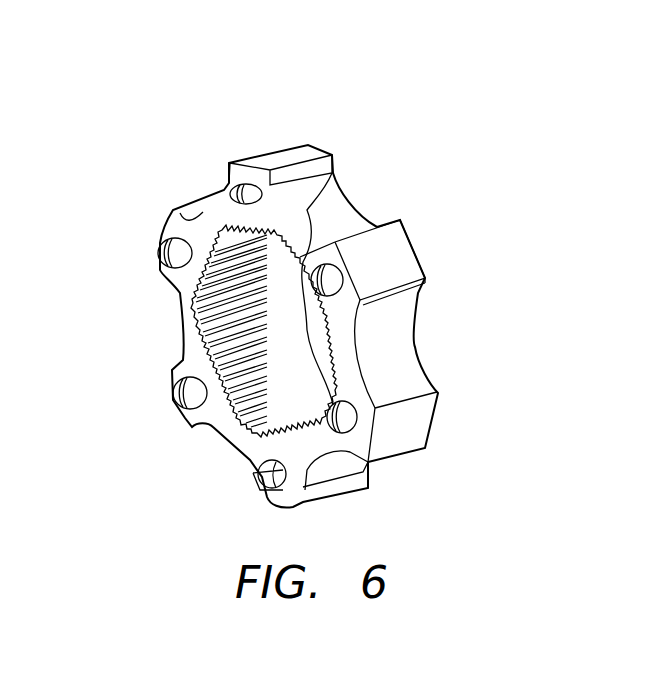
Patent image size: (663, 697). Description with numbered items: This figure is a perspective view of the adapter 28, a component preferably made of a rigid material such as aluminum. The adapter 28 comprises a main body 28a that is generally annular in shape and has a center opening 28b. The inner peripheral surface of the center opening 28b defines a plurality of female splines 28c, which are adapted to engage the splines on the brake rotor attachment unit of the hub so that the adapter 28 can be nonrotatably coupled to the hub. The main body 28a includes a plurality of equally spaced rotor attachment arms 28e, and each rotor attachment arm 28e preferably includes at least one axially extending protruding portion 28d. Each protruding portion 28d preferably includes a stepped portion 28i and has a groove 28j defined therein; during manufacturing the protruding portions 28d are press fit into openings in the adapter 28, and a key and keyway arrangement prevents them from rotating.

The adapter 28 is at (392, 105).
The main body 28a is at (403, 347).
The center opening 28b is at (273, 332).
The female splines 28c is at (213, 338).
The protruding portion 28d is at (229, 196).
The rotor attachment arm 28e is at (281, 153).
The stepped portion 28i is at (187, 398).
The groove 28j is at (335, 275).